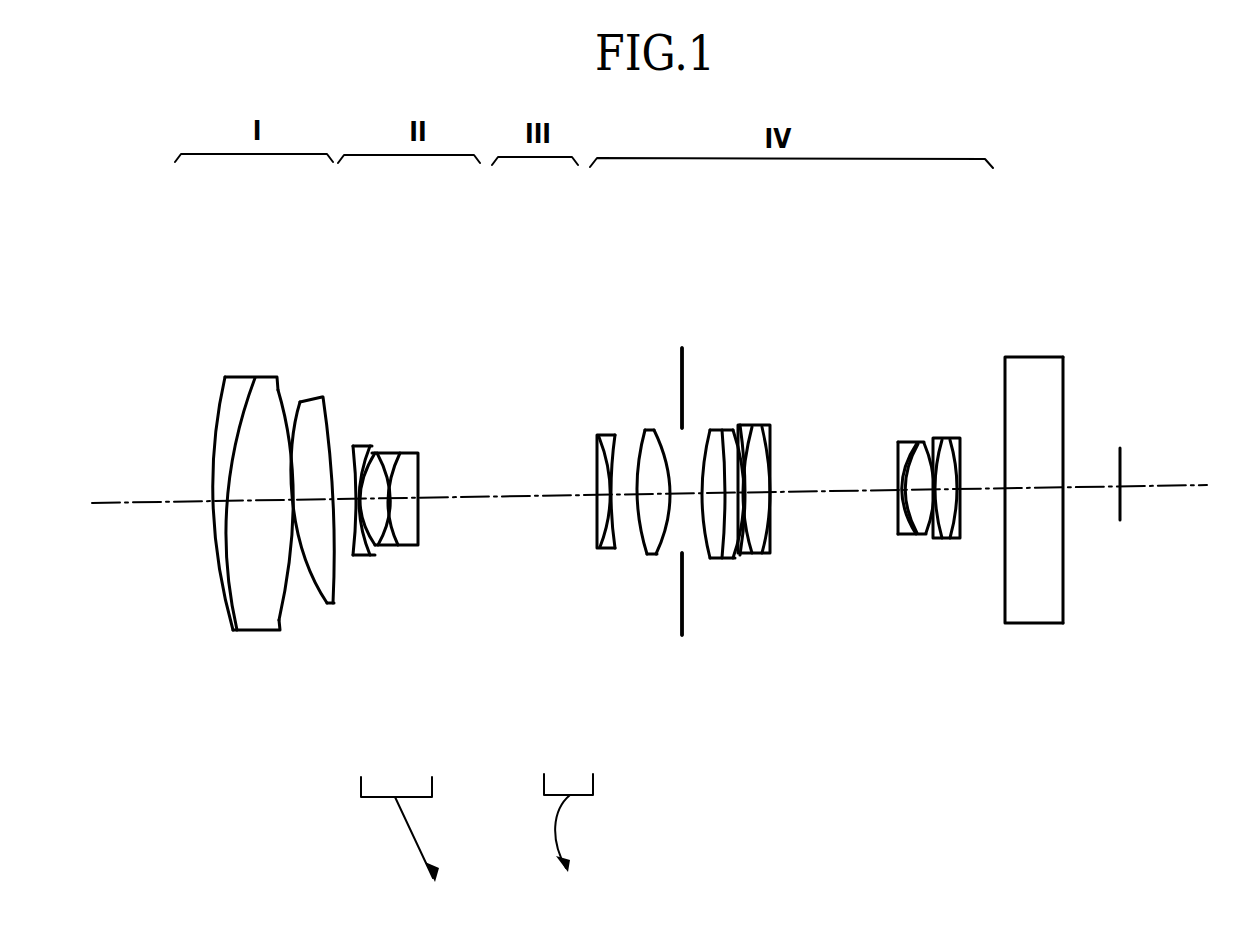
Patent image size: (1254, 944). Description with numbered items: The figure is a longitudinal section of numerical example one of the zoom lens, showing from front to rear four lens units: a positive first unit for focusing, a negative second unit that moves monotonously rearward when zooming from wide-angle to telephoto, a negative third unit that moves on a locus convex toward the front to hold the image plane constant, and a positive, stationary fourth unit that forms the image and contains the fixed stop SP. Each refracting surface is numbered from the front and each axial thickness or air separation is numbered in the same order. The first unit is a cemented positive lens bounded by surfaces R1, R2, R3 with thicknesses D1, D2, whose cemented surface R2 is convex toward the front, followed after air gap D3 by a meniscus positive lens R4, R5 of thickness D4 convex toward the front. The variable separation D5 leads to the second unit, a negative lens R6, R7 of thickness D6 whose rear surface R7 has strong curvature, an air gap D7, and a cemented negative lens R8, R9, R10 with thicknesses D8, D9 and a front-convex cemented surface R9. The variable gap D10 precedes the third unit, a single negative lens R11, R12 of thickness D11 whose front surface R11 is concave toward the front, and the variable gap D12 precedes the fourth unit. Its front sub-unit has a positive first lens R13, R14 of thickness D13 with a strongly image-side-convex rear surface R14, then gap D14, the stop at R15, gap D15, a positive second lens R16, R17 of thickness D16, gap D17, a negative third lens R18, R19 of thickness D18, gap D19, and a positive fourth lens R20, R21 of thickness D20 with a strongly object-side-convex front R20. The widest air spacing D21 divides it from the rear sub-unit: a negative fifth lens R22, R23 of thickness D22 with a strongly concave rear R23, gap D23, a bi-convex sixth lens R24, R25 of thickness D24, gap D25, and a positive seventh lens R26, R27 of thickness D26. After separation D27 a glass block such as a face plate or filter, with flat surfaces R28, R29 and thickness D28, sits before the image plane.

The first lens surface R1 is at (224, 382).
The second lens surface R2 is at (250, 378).
The third lens surface R3 is at (278, 380).
The fourth lens surface R4 is at (299, 400).
The fifth lens surface R5 is at (333, 395).
The sixth lens surface R6 is at (353, 445).
The seventh lens surface R7 is at (369, 445).
The eighth lens surface R8 is at (376, 452).
The ninth lens surface R9 is at (388, 452).
The tenth lens surface R10 is at (408, 452).
The eleventh lens surface R11 is at (598, 436).
The twelfth lens surface R12 is at (614, 435).
The thirteenth lens surface R13 is at (644, 430).
The fourteenth lens surface R14 is at (654, 430).
The stop surface R15 is at (681, 368).
The sixteenth lens surface R16 is at (710, 430).
The seventeenth lens surface R17 is at (722, 430).
The eighteenth lens surface R18 is at (735, 430).
The nineteenth lens surface R19 is at (742, 426).
The twentieth lens surface R20 is at (754, 427).
The twenty-first lens surface R21 is at (765, 427).
The twenty-second lens surface R22 is at (897, 442).
The twenty-third lens surface R23 is at (916, 443).
The twenty-fourth lens surface R24 is at (918, 444).
The twenty-fifth lens surface R25 is at (924, 443).
The twenty-sixth lens surface R26 is at (942, 440).
The twenty-seventh lens surface R27 is at (950, 440).
The glass block front surface R28 is at (1006, 367).
The glass block rear surface R29 is at (1065, 368).
The stop SP is at (683, 637).
The first axial thickness D1 is at (233, 632).
The second axial thickness D2 is at (274, 630).
The third air separation D3 is at (294, 598).
The fourth axial thickness D4 is at (318, 585).
The fifth air separation D5 is at (345, 548).
The sixth axial thickness D6 is at (363, 556).
The seventh air separation D7 is at (374, 550).
The eighth axial thickness D8 is at (388, 546).
The ninth axial thickness D9 is at (402, 546).
The tenth air separation D10 is at (493, 497).
The eleventh axial thickness D11 is at (607, 549).
The twelfth air separation D12 is at (628, 497).
The thirteenth axial thickness D13 is at (650, 553).
The fourteenth air separation D14 is at (677, 497).
The fifteenth air separation D15 is at (690, 500).
The sixteenth axial thickness D16 is at (715, 560).
The seventeenth air separation D17 is at (733, 555).
The eighteenth axial thickness D18 is at (745, 556).
The nineteenth air separation D19 is at (753, 555).
The twentieth axial thickness D20 is at (767, 494).
The twenty-first air separation D21 is at (826, 492).
The twenty-second axial thickness D22 is at (897, 497).
The twenty-third air separation D23 is at (904, 537).
The twenty-fourth axial thickness D24 is at (926, 536).
The twenty-fifth air separation D25 is at (934, 538).
The twenty-sixth axial thickness D26 is at (947, 540).
The twenty-seventh air separation D27 is at (985, 492).
The twenty-eighth axial thickness D28 is at (1040, 488).